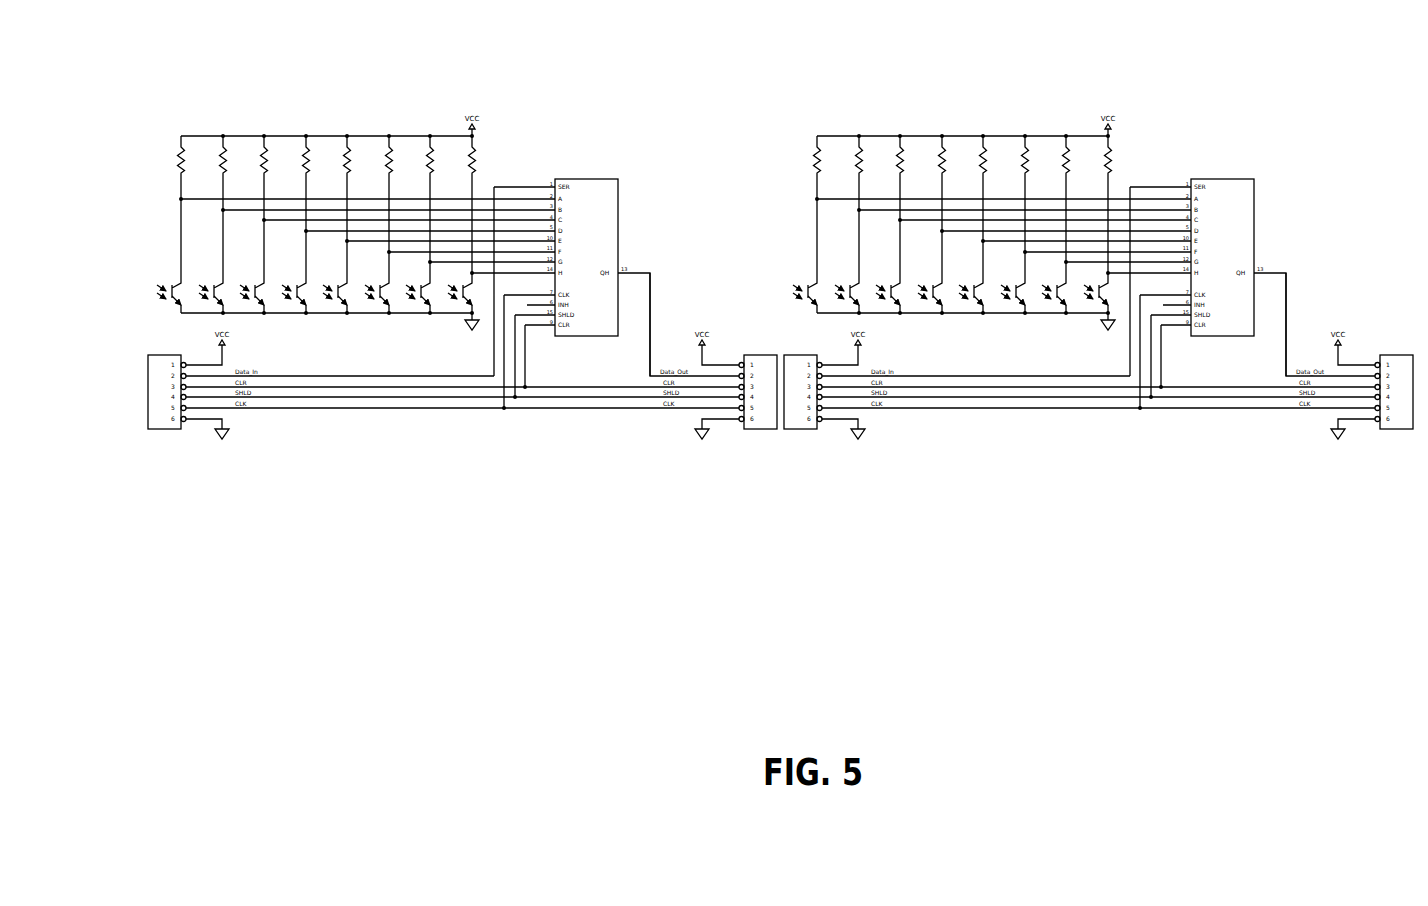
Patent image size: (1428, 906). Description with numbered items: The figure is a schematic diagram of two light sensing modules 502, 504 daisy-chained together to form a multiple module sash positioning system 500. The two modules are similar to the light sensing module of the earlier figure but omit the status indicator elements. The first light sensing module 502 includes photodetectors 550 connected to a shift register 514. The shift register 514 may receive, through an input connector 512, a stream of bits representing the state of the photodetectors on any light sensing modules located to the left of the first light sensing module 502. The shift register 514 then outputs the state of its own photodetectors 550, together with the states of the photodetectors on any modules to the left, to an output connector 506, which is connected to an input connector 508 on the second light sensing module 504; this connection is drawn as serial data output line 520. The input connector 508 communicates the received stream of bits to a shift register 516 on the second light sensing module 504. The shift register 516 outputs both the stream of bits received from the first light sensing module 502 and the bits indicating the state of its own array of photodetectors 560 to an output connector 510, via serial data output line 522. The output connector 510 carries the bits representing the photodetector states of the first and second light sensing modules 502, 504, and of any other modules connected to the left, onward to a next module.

The multiple module sash positioning system 500 is at (400, 93).
The first light sensing module 502 is at (449, 430).
The second light sensing module 504 is at (1123, 450).
The output connector 506 is at (755, 443).
The input connector 508 is at (799, 445).
The output connector 510 is at (1403, 443).
The input connector 512 is at (164, 433).
The shift register 514 is at (615, 230).
The shift register 516 is at (1251, 230).
The first serial data output line 520 is at (650, 307).
The second serial data output line 522 is at (1286, 318).
The photodetectors 550 is at (366, 326).
The array of photodetectors 560 is at (966, 335).